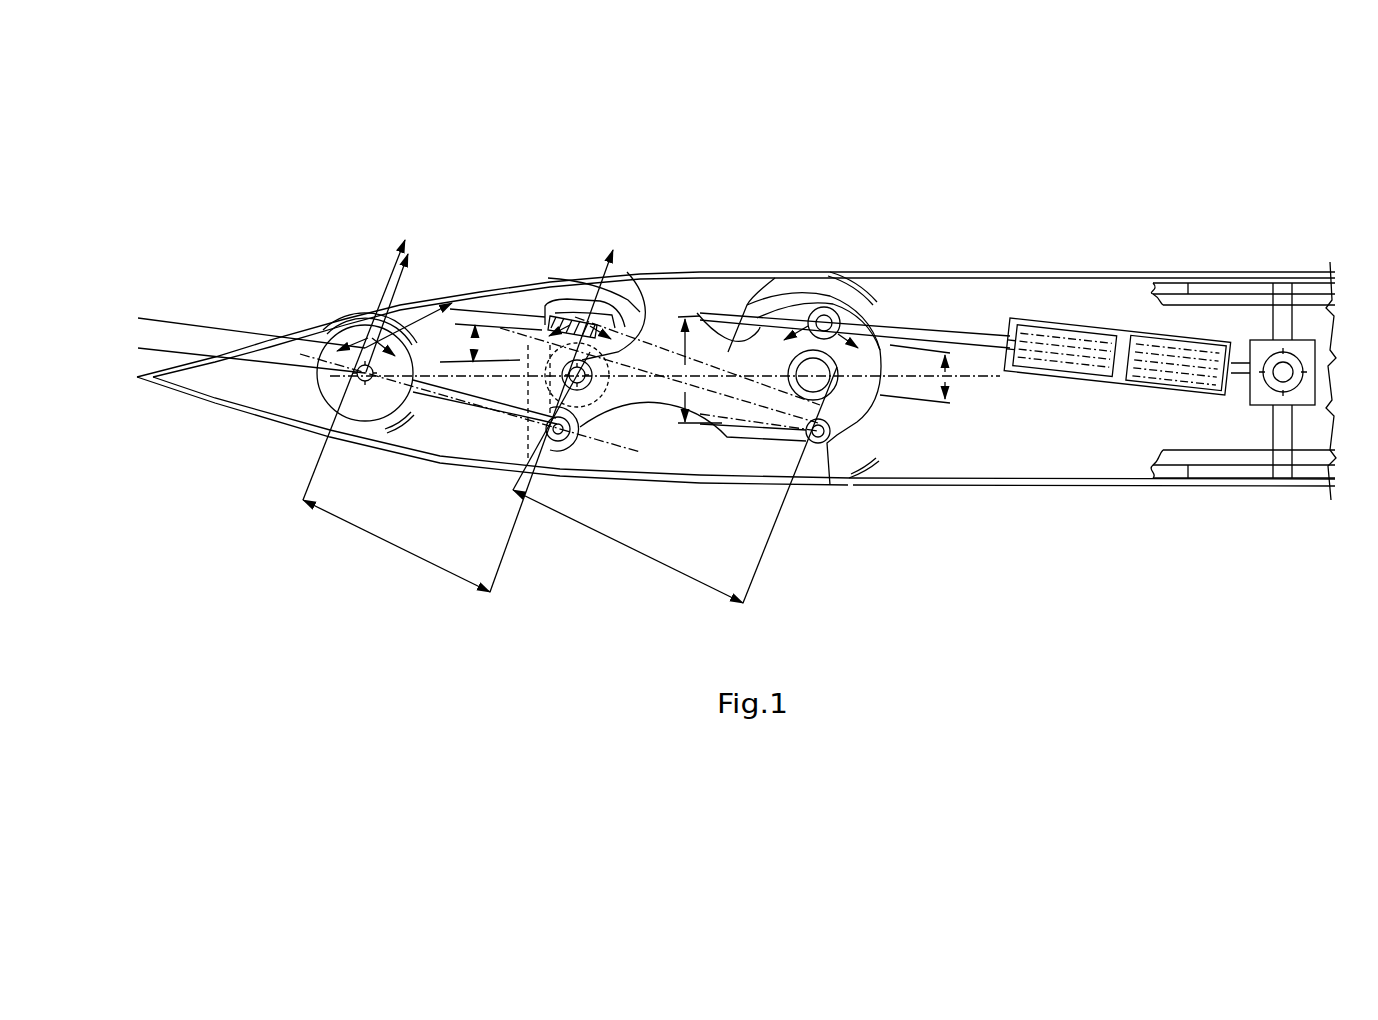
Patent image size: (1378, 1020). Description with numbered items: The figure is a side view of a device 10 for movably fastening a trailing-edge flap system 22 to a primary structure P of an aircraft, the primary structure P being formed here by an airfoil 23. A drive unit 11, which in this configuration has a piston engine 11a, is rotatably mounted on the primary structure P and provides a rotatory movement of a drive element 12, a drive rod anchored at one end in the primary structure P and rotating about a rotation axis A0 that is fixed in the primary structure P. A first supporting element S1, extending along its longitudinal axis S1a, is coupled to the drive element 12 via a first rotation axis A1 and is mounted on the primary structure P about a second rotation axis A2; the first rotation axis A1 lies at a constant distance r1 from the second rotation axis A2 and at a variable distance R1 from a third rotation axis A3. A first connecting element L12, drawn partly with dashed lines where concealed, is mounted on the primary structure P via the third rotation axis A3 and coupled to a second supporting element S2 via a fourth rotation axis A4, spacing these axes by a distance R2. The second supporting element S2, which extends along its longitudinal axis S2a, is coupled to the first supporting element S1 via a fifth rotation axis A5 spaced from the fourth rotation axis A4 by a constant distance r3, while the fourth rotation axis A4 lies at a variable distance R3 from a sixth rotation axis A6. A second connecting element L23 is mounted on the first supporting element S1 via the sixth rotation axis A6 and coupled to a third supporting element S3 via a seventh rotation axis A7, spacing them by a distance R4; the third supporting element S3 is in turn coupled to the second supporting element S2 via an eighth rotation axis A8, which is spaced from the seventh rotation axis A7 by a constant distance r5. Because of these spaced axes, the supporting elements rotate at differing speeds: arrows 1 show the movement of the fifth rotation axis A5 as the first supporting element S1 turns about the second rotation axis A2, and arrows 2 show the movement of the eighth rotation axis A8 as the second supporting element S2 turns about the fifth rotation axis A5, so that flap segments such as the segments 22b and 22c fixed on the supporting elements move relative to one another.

The device 10 is at (341, 104).
The trailing-edge flap system 22 is at (729, 140).
The trailing-edge flap segment 22b is at (547, 283).
The trailing-edge flap segment 22c is at (205, 402).
The arrows 2 is at (397, 498).
The arrows 1 is at (595, 256).
The drive unit 11 is at (1068, 302).
The piston engine 11a is at (1173, 342).
The drive element 12 is at (913, 327).
The airfoil 23 is at (1183, 522).
The primary structure P is at (1313, 337).
The rotation axis A0 is at (1307, 348).
The first rotation axis A1 is at (828, 317).
The second rotation axis A2 is at (900, 440).
The third rotation axis A3 is at (830, 460).
The fourth rotation axis A4 is at (588, 302).
The fifth rotation axis A5 is at (636, 427).
The sixth rotation axis A6 is at (573, 457).
The seventh rotation axis A7 is at (337, 357).
The eighth rotation axis A8 is at (343, 395).
The first connecting element L12 is at (622, 332).
The second connecting element L23 is at (470, 440).
The first supporting element S1 is at (698, 314).
The longitudinal axis S1a is at (698, 316).
The second supporting element S2 is at (517, 350).
The longitudinal axis S2a is at (412, 375).
The third supporting element S3 is at (300, 422).
The variable distance R1 is at (696, 369).
The distance R2 is at (675, 477).
The variable distance R3 is at (412, 333).
The distance R4 is at (396, 416).
The constant distance r1 is at (915, 378).
The constant distance r3 is at (474, 344).
The constant distance r5 is at (152, 296).